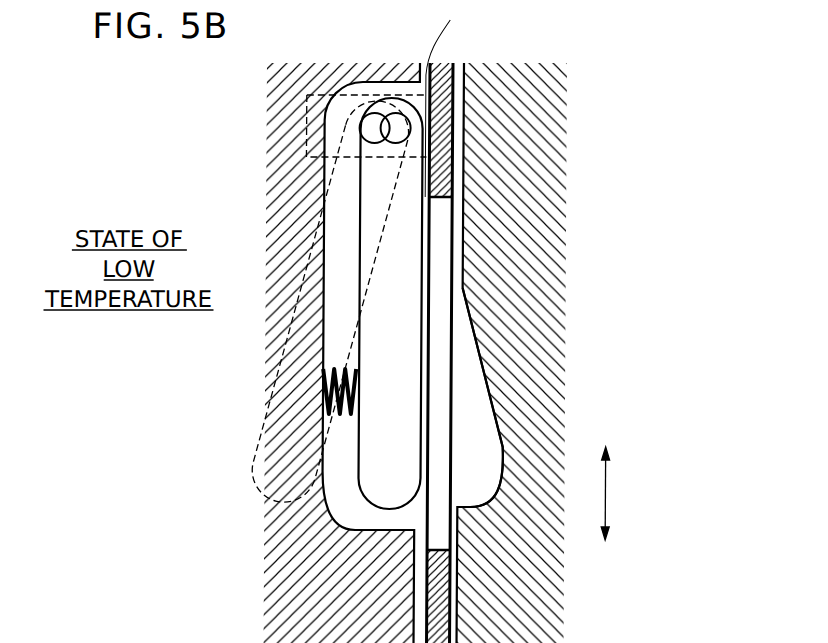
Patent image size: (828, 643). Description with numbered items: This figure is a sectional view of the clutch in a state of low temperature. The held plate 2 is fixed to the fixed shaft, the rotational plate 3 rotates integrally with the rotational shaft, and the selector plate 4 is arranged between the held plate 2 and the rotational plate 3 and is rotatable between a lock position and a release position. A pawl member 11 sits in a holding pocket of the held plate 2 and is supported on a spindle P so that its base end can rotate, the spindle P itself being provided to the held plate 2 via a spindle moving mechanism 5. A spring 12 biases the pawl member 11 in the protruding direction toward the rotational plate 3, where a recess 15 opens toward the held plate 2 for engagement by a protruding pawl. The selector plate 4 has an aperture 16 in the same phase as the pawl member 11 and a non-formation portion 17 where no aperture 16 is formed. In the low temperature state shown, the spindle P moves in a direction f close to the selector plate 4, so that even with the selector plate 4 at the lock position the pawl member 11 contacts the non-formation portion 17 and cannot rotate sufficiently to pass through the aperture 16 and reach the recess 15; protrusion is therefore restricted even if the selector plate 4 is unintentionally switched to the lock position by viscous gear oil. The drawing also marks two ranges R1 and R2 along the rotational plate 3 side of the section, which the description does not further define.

The held plate 2 is at (290, 167).
The rotational plate 3 is at (517, 135).
The selector plate 4 is at (460, 91).
The spindle moving mechanism 5 is at (350, 78).
The pawl member 11 is at (405, 253).
The spring 12 is at (327, 420).
The recess 15 is at (470, 410).
The aperture 16 is at (438, 510).
The non-formation portion 17 is at (442, 178).
The spindle P is at (445, 101).
The direction f is at (390, 32).
The range R1 is at (606, 482).
The range R2 is at (607, 556).